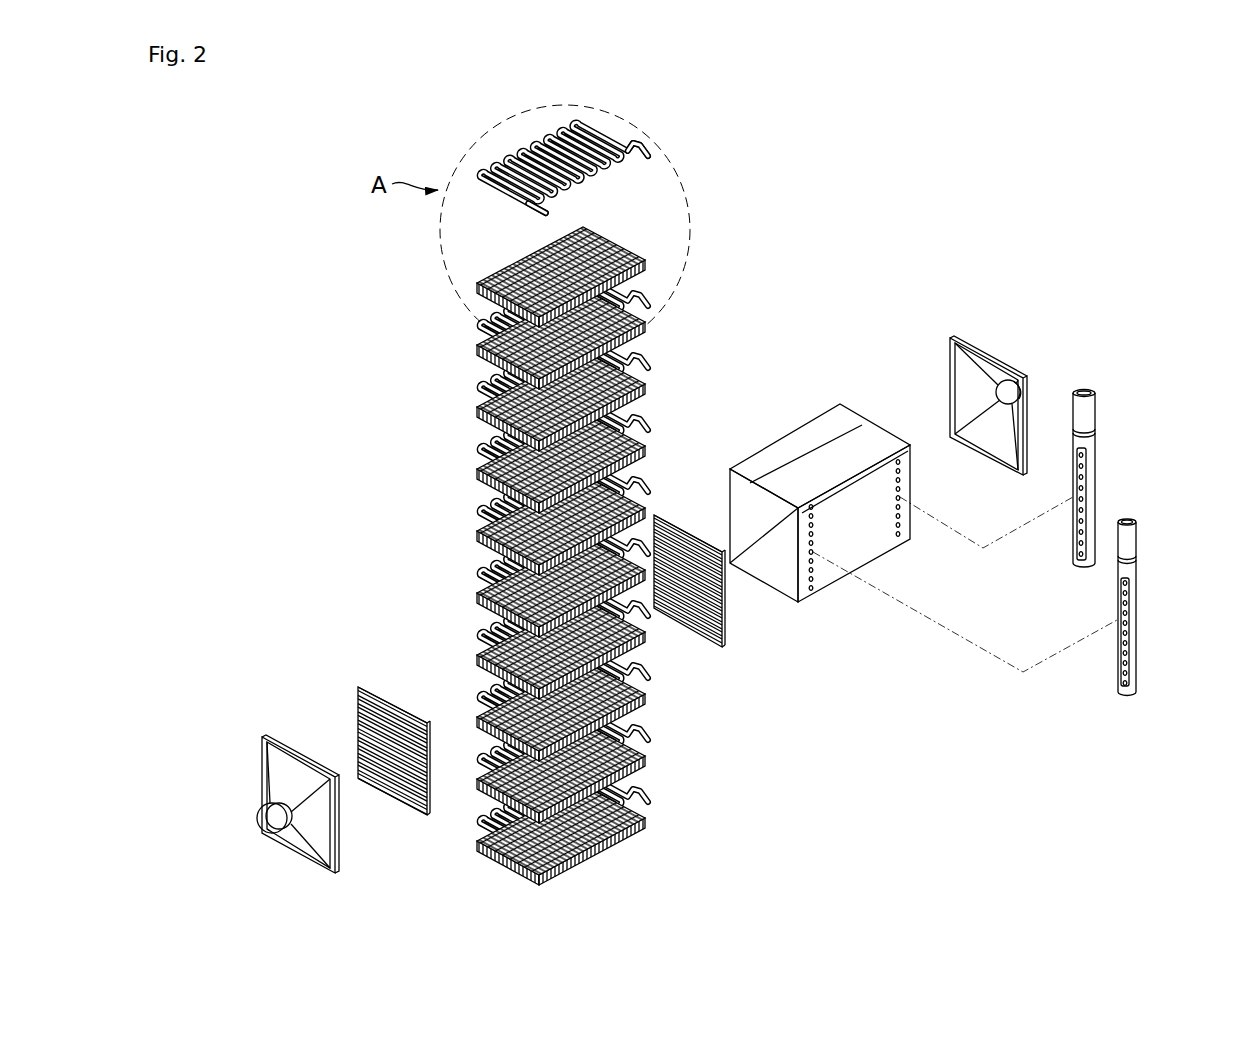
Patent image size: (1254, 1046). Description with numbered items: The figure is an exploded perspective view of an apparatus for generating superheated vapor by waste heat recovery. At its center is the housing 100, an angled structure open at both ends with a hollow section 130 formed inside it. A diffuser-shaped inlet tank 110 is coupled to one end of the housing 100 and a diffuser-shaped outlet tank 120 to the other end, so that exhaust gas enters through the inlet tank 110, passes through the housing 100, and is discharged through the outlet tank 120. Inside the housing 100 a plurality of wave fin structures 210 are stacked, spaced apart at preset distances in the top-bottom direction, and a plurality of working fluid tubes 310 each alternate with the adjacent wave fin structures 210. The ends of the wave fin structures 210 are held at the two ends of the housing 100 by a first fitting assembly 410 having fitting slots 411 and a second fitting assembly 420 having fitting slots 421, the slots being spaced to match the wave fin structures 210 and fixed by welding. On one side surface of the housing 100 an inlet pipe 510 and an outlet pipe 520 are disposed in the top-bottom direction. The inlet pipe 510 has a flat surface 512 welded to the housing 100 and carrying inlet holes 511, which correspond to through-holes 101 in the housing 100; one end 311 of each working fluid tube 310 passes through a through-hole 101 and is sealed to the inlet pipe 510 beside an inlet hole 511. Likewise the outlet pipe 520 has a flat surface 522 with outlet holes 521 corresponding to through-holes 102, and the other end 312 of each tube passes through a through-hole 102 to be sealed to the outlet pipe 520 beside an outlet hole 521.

The housing 100 is at (834, 508).
The through-holes 101 is at (901, 463).
The through-holes 102 is at (813, 522).
The inlet tank 110 is at (247, 774).
The outlet tank 120 is at (1006, 351).
The hollow section 130 is at (748, 509).
The wave fin structures 210 is at (476, 283).
The working fluid tubes 310 is at (642, 143).
The one end of working fluid tube 311 is at (650, 160).
The other end of working fluid tube 312 is at (540, 212).
The first fitting assembly 410 is at (390, 759).
The fitting slots 411 is at (387, 702).
The second fitting assembly 420 is at (723, 599).
The fitting slots 421 is at (672, 540).
The inlet pipe 510 is at (1087, 479).
The inlet holes 511 is at (1075, 484).
The flat surface 512 is at (1082, 475).
The outlet pipe 520 is at (1133, 607).
The outlet holes 521 is at (1119, 600).
The flat surface 522 is at (1131, 630).